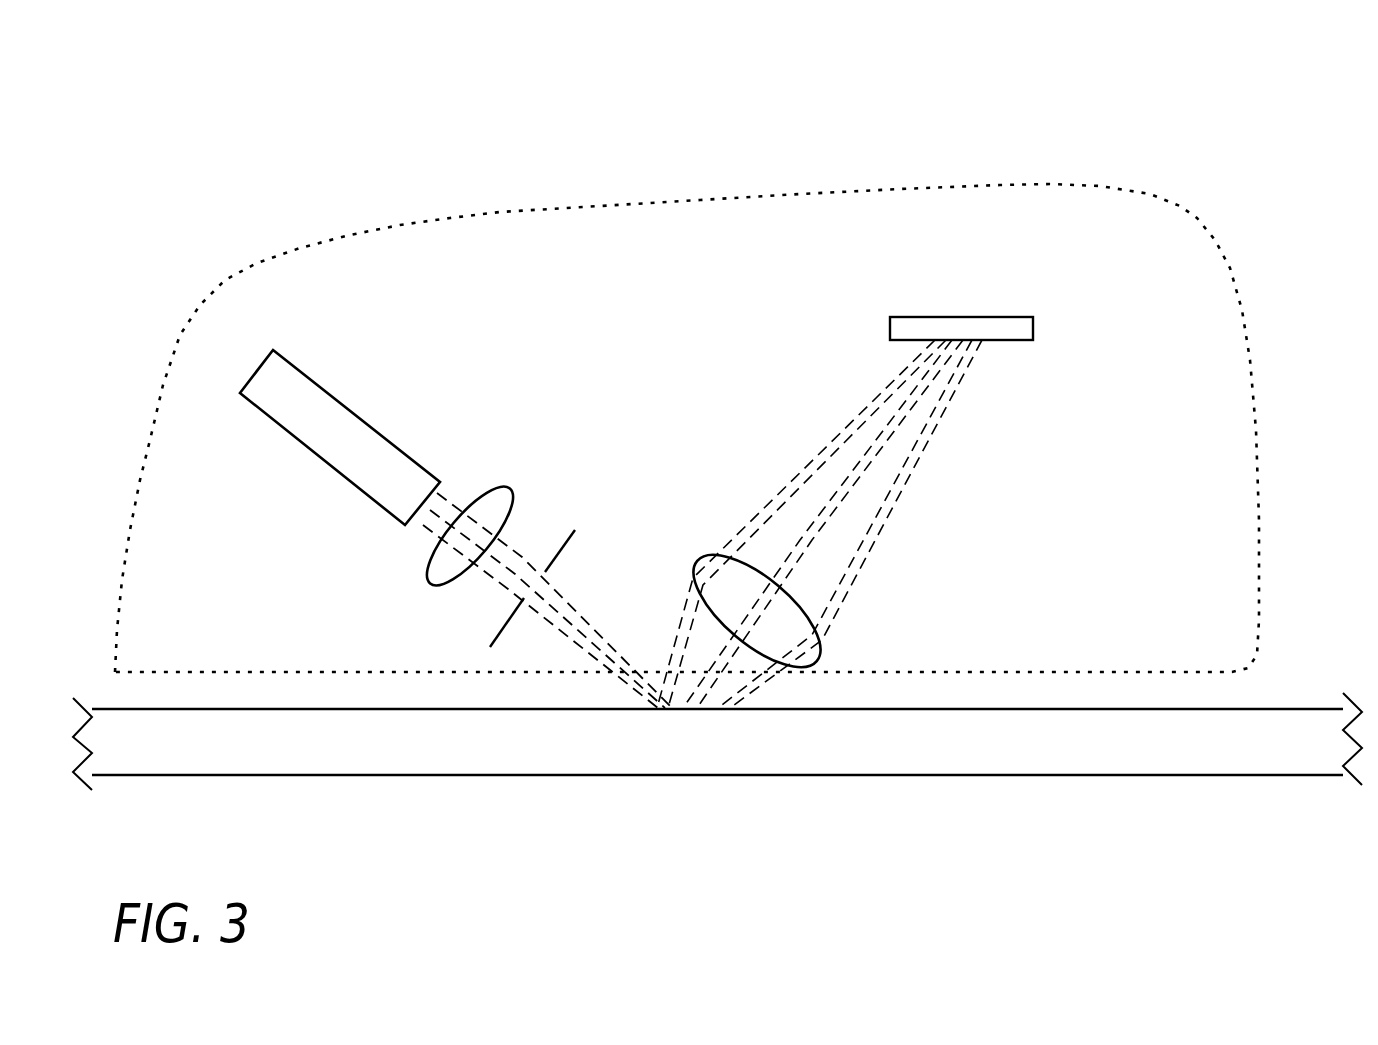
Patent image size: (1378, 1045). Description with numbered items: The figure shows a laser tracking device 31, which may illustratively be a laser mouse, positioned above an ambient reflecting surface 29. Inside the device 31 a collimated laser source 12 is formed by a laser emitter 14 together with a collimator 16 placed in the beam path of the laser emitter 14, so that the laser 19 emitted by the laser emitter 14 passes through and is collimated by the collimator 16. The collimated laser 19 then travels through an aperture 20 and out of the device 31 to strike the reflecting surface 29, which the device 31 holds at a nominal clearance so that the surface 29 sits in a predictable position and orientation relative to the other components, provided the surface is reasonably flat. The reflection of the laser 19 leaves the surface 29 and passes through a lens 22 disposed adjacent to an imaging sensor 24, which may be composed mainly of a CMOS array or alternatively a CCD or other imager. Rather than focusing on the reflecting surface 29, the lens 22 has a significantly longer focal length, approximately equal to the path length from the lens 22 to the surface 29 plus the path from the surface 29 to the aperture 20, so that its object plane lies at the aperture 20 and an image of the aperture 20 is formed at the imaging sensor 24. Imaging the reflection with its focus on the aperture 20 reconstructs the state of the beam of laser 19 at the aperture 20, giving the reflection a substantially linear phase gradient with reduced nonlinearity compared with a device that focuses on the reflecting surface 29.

The collimated laser source 12 is at (374, 450).
The laser emitter 14 is at (287, 435).
The collimator 16 is at (428, 576).
The laser 19 is at (522, 548).
The aperture 20 is at (550, 568).
The lens 22 is at (827, 660).
The imaging sensor 24 is at (968, 317).
The reflecting surface 29 is at (1272, 707).
The device 31 is at (1203, 212).